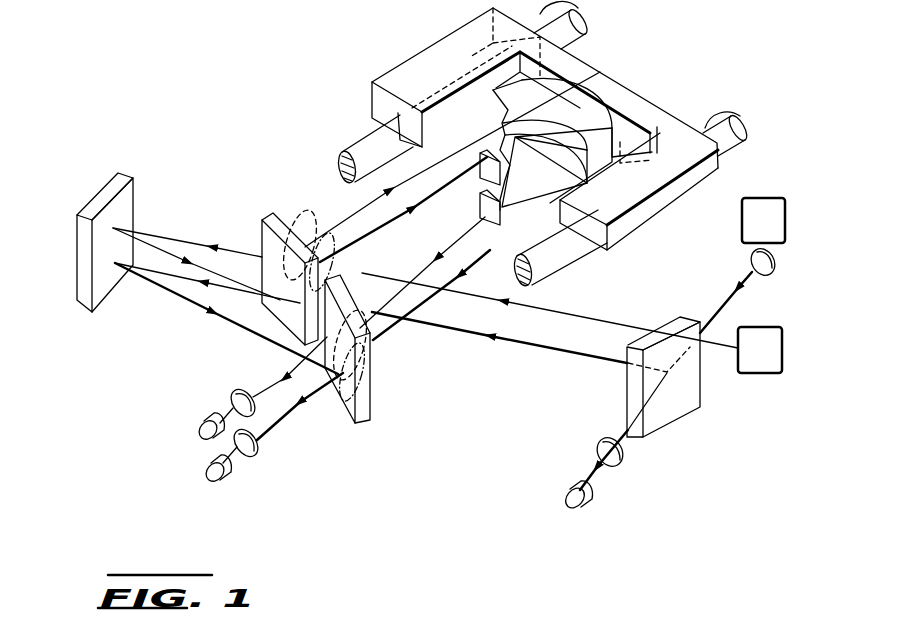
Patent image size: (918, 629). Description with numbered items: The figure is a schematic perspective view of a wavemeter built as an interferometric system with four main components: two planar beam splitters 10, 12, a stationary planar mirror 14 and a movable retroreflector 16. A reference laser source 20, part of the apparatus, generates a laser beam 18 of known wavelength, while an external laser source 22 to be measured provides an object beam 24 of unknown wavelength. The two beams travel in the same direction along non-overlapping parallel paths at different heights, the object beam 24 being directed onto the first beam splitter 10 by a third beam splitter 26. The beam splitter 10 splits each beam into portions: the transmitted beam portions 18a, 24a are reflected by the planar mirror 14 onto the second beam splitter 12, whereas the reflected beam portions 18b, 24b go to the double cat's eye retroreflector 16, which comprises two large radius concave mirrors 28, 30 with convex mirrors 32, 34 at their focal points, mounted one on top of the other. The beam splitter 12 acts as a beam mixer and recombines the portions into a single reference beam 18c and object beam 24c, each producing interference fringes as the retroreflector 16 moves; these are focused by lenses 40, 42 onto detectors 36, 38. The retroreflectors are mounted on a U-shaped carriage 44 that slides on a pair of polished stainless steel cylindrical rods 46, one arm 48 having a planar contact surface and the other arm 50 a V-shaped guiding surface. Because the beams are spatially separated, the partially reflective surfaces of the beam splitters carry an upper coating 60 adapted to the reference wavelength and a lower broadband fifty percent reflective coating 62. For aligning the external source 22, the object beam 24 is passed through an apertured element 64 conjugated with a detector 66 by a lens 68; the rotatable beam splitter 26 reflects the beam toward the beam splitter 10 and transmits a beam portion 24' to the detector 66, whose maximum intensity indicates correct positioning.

The beam splitter 10 is at (260, 232).
The second beam splitter 12 is at (372, 407).
The planar mirror 14 is at (125, 200).
The retroreflector 16 is at (642, 78).
The laser beam 18 is at (607, 330).
The beam portion 18a is at (192, 221).
The beam portion 18b is at (380, 196).
The reference beam 18c is at (270, 390).
The reference laser source 20 is at (771, 332).
The laser source 22 is at (765, 199).
The object beam 24 is at (550, 332).
The beam portion 24' is at (628, 467).
The beam portion 24a is at (160, 281).
The beam portion 24b is at (398, 226).
The object beam 24c is at (315, 398).
The third beam splitter 26 is at (682, 395).
The concave mirror 28 is at (552, 106).
The concave mirror 30 is at (653, 145).
The convex mirror 32 is at (485, 165).
The convex mirror 34 is at (496, 226).
The detector 36 is at (206, 425).
The detector 38 is at (229, 473).
The lens 40 is at (241, 396).
The lens 42 is at (258, 448).
The U-shaped carriage 44 is at (660, 118).
The cylindrical rods 46 is at (353, 140).
The arm 48 is at (680, 186).
The arm 50 is at (416, 64).
The coating 60 is at (313, 215).
The broadband 50% reflective coating 62 is at (328, 240).
The apertured element 64 is at (752, 259).
The detector 66 is at (568, 489).
The lens 68 is at (610, 440).